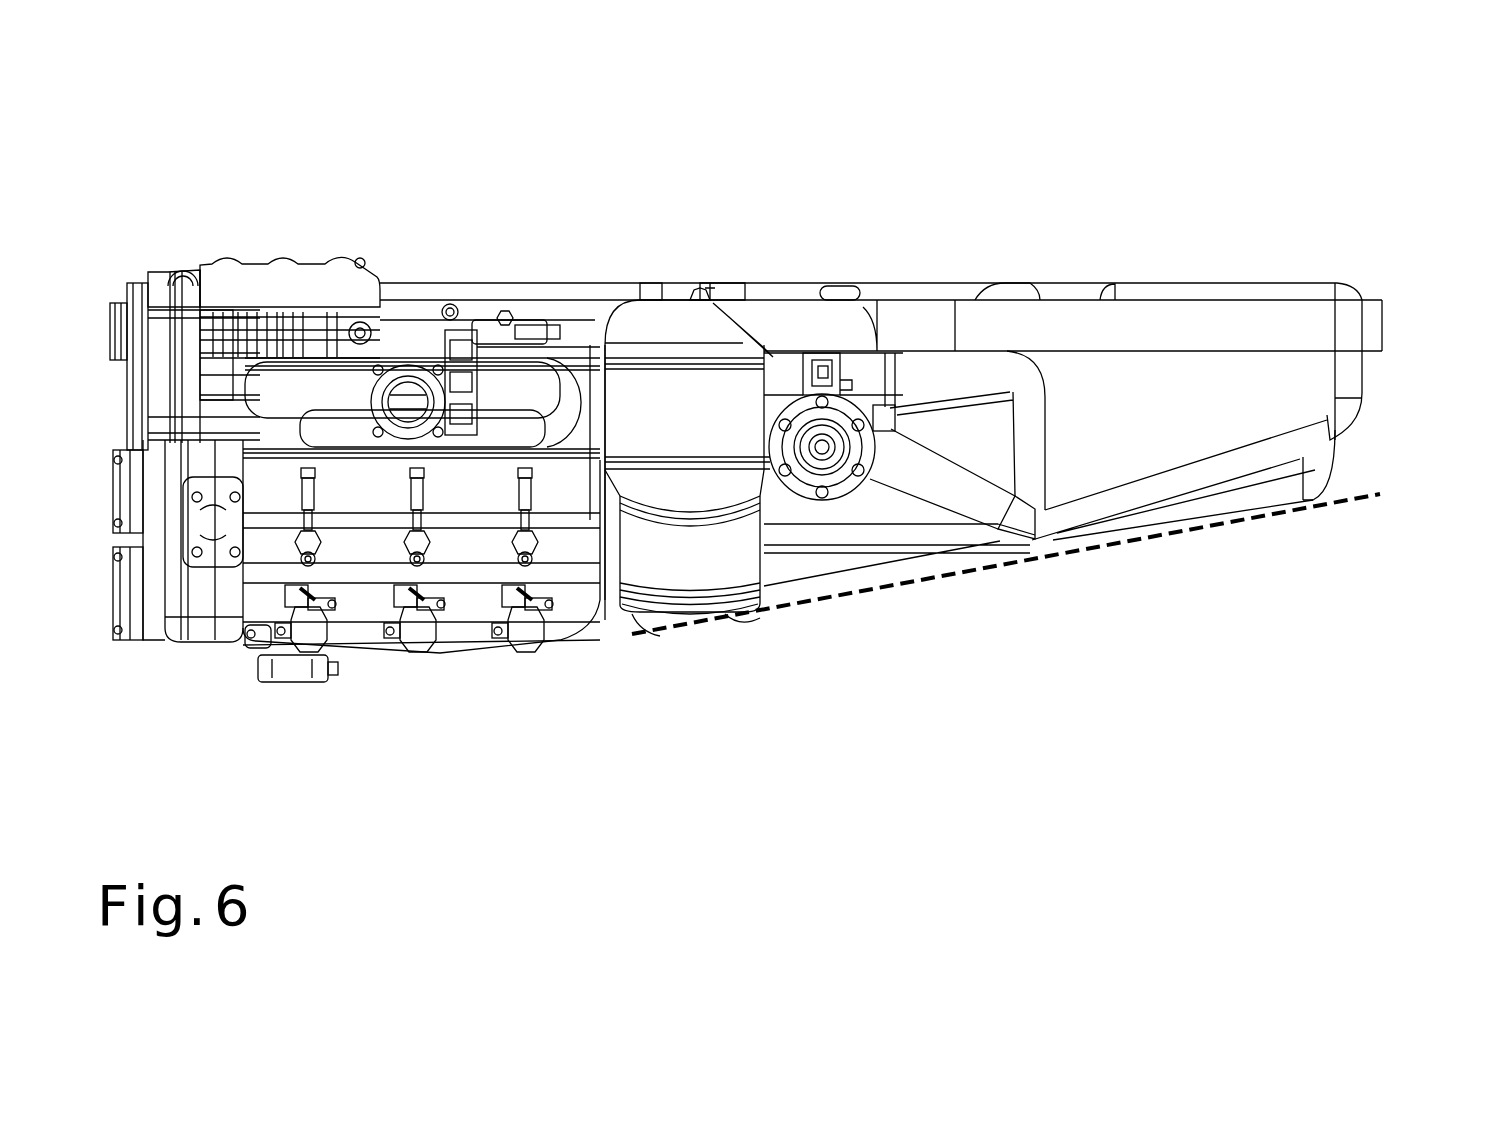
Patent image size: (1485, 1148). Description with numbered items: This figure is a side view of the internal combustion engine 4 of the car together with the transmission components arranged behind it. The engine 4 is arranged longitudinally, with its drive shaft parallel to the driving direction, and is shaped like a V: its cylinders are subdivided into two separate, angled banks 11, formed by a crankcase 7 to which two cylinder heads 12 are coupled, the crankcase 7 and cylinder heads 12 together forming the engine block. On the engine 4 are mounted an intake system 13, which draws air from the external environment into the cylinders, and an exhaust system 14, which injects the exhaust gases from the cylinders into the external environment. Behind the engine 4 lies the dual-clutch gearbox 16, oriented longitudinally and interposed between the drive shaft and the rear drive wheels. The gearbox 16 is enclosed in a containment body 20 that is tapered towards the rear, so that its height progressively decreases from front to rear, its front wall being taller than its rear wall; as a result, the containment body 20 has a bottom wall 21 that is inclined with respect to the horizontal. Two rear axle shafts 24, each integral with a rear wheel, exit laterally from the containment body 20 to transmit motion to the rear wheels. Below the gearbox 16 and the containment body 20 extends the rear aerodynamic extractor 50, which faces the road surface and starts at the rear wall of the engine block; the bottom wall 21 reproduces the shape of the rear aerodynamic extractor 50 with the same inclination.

The internal combustion engine 4 is at (386, 145).
The crankcase 7 is at (584, 320).
The banks 11 is at (452, 692).
The cylinder heads 12 is at (566, 550).
The intake system 13 is at (503, 342).
The exhaust system 14 is at (775, 262).
The dual-clutch gearbox 16 is at (1178, 156).
The containment body 20 is at (1396, 373).
The bottom wall 21 is at (1006, 545).
The rear axle shafts 24 is at (824, 456).
The rear aerodynamic extractor 50 is at (1161, 540).